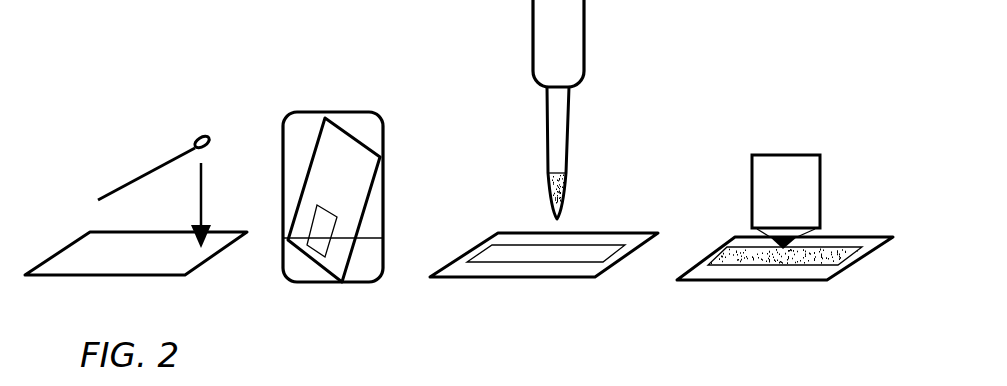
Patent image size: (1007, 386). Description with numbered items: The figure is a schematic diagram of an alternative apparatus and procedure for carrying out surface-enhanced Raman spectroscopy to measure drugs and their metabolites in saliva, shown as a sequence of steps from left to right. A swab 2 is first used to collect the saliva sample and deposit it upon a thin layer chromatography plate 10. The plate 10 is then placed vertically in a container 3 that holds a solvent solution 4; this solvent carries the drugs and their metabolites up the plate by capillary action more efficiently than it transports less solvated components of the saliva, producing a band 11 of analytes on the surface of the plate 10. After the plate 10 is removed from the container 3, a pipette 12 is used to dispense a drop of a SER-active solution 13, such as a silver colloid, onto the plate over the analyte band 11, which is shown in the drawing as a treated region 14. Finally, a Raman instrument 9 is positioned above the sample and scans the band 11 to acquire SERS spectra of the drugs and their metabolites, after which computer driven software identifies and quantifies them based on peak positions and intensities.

The swab 2 is at (154, 167).
The container 3 is at (320, 197).
The solvent solution 4 is at (333, 259).
The Raman instrument 9 is at (786, 202).
The thin layer chromatography plate 10 is at (202, 200).
The band 11 is at (466, 223).
The pipette 12 is at (533, 43).
The SER-active solution 13 is at (533, 153).
The developed sample area 14 is at (785, 257).